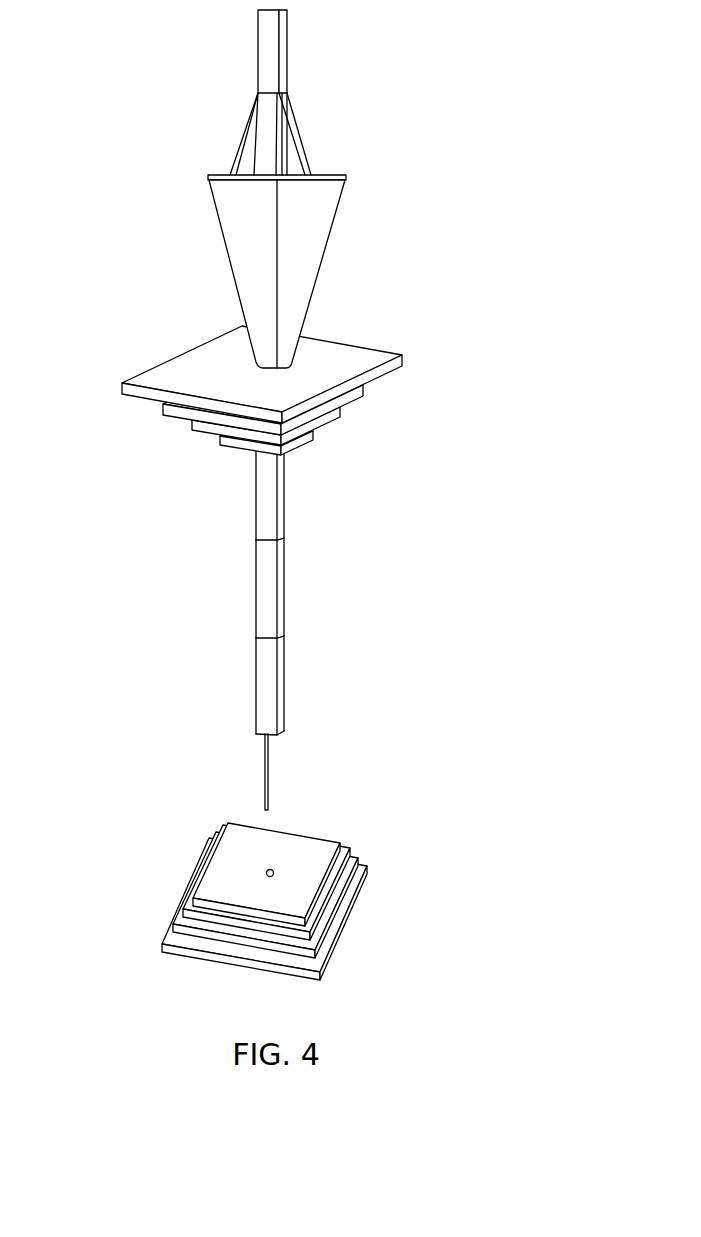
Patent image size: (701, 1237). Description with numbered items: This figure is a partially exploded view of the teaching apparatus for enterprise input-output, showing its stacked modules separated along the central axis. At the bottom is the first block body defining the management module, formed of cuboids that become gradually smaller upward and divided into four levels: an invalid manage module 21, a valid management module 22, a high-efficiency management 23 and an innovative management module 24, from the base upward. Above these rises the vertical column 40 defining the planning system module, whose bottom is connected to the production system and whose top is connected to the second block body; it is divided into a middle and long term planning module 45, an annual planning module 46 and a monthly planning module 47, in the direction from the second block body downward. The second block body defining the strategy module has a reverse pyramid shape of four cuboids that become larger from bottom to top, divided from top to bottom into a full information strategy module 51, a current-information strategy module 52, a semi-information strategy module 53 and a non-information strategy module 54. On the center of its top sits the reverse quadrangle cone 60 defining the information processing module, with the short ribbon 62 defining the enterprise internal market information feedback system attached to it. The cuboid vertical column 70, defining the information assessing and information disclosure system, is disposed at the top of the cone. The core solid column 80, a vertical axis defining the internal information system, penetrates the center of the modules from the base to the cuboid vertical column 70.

The invalid manage module 21 is at (175, 943).
The valid management module 22 is at (185, 925).
The high-efficiency management 23 is at (190, 910).
The innovative management module 24 is at (222, 863).
The vertical column 40 is at (357, 593).
The middle and long term planning module 45 is at (269, 495).
The annual planning module 46 is at (269, 602).
The monthly planning module 47 is at (268, 692).
The full information strategy module 51 is at (390, 363).
The current-information strategy module 52 is at (355, 395).
The semi-information strategy module 53 is at (328, 418).
The non-information strategy module 54 is at (300, 440).
The reverse quadrangle cone 60 is at (310, 248).
The short ribbon 62 is at (238, 155).
The cuboid vertical column 70 is at (270, 52).
The core solid column 80 is at (268, 772).